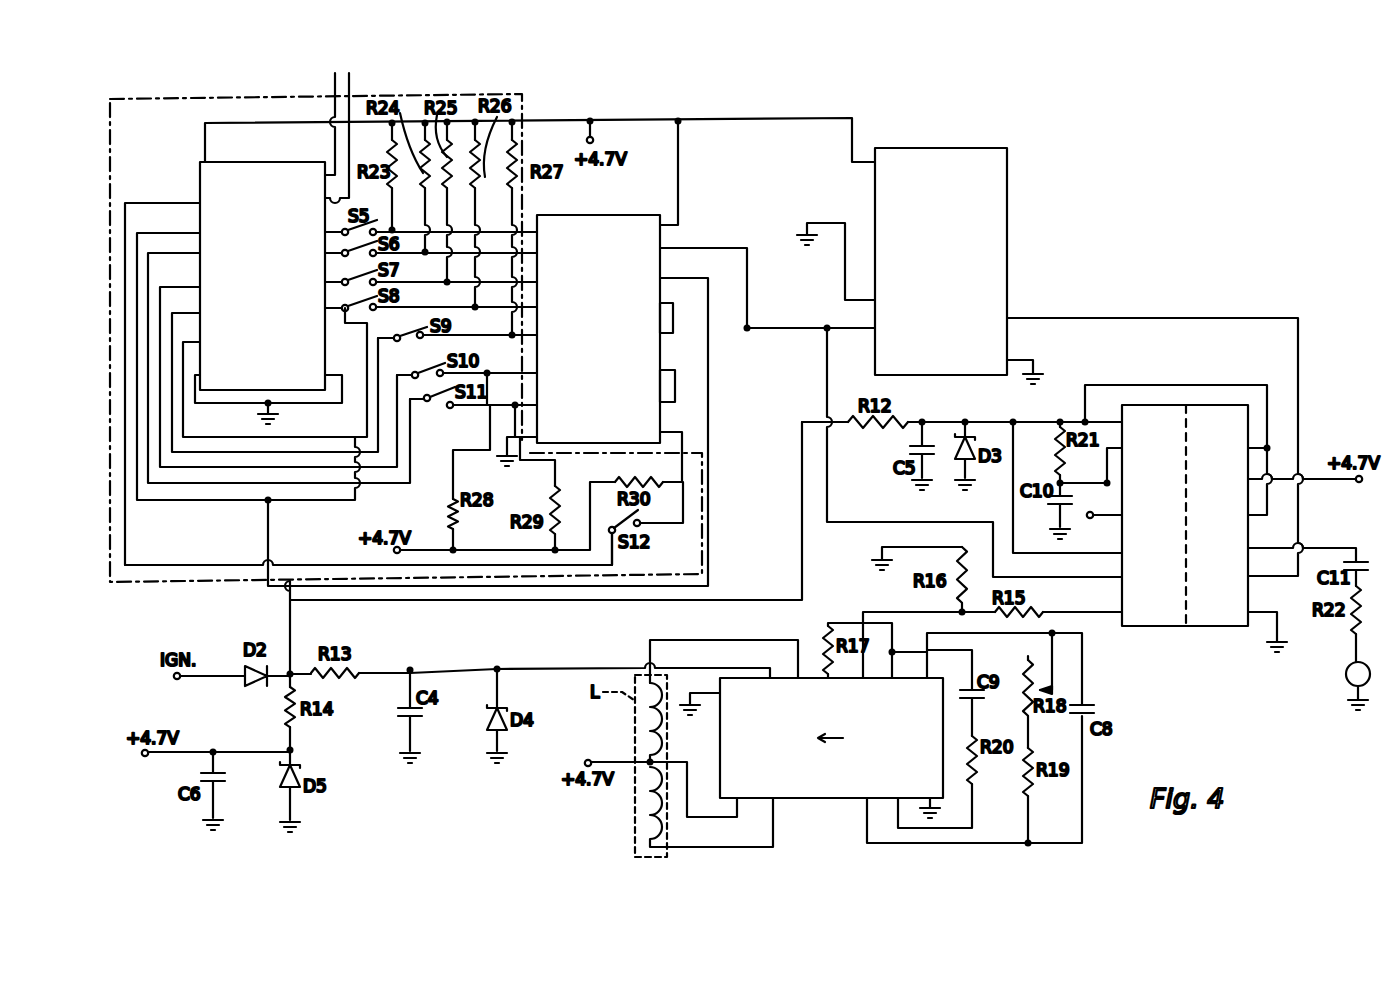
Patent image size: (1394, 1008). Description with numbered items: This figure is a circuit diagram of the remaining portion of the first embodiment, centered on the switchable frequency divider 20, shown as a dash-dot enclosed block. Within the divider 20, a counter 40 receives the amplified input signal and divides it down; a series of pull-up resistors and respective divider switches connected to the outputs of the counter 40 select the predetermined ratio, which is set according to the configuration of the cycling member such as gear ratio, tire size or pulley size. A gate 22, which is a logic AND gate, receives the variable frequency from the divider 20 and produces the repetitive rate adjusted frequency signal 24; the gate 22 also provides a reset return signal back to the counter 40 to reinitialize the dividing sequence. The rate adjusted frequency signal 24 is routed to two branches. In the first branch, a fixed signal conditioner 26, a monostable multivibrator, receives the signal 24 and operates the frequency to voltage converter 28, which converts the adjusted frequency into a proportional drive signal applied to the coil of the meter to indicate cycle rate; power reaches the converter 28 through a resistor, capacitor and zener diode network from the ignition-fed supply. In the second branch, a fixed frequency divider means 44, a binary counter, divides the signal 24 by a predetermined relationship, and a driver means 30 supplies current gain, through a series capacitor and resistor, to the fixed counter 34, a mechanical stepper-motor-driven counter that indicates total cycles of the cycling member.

The switchable frequency divider 20 is at (205, 97).
The gate 22 is at (582, 237).
The repetitive rate adjusted frequency signal 24 is at (749, 326).
The fixed signal conditioner 26 is at (1162, 607).
The frequency to voltage converter 28 is at (828, 775).
The driver means 30 is at (1215, 603).
The fixed counter 34 is at (1346, 680).
The counter 40 is at (213, 193).
The fixed frequency divider means 44 is at (953, 162).